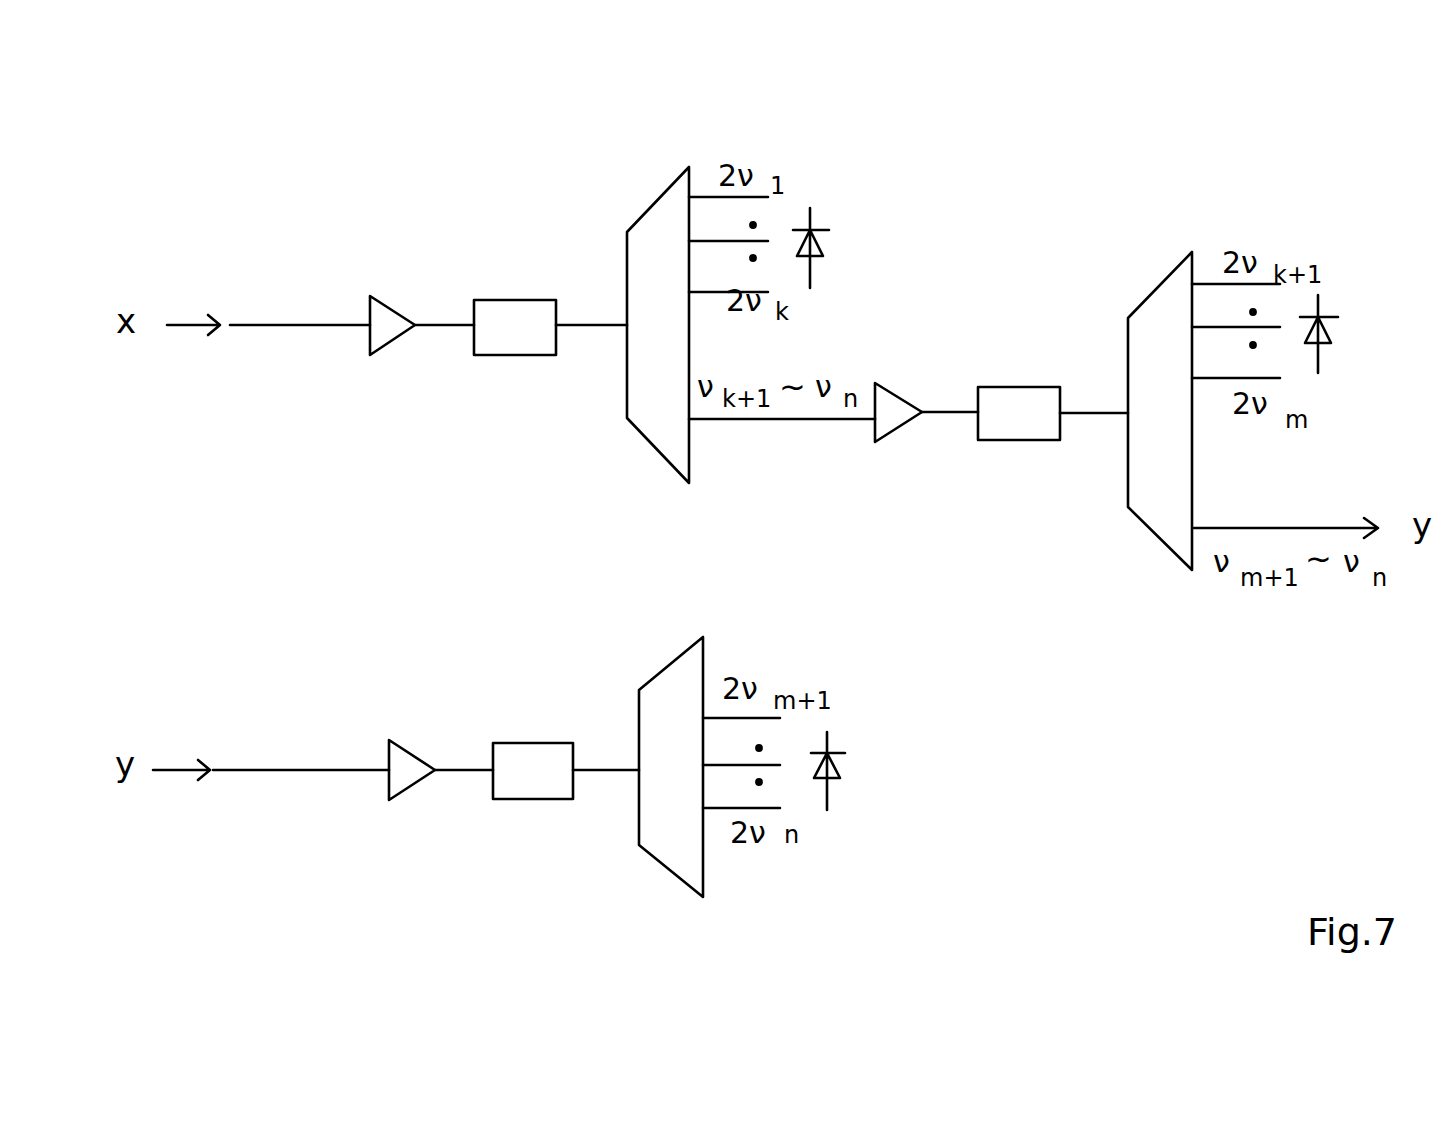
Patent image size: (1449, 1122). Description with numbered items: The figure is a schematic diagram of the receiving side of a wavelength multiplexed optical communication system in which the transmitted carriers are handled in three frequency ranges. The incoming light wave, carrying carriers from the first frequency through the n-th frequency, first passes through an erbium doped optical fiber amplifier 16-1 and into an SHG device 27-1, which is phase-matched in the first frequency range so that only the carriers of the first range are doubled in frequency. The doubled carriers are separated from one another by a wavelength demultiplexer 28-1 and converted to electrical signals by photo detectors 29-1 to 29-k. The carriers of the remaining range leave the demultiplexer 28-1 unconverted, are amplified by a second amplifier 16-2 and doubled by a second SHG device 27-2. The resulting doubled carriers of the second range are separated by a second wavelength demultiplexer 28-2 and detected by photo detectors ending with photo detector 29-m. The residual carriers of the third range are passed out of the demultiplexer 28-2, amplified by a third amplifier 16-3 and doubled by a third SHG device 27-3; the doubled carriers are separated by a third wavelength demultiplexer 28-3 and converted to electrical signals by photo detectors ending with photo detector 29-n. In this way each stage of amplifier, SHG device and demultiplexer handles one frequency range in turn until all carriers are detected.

The erbium doped optical fiber amplifier 16-1 is at (388, 300).
The erbium doped optical fiber amplifier 16-2 is at (890, 420).
The erbium doped optical fiber amplifier 16-3 is at (395, 732).
The SHG device 27-1 is at (514, 318).
The SHG device 27-2 is at (1026, 423).
The SHG device 27-3 is at (531, 725).
The wavelength demultiplexer 28-1 is at (657, 242).
The wavelength demultiplexer 28-2 is at (1165, 320).
The wavelength demultiplexer 28-3 is at (659, 743).
The photo detector 29-1 is at (905, 214).
The photo detector 29-k is at (838, 240).
The photo detector 29-m is at (1338, 295).
The photo detector 29-n is at (858, 758).